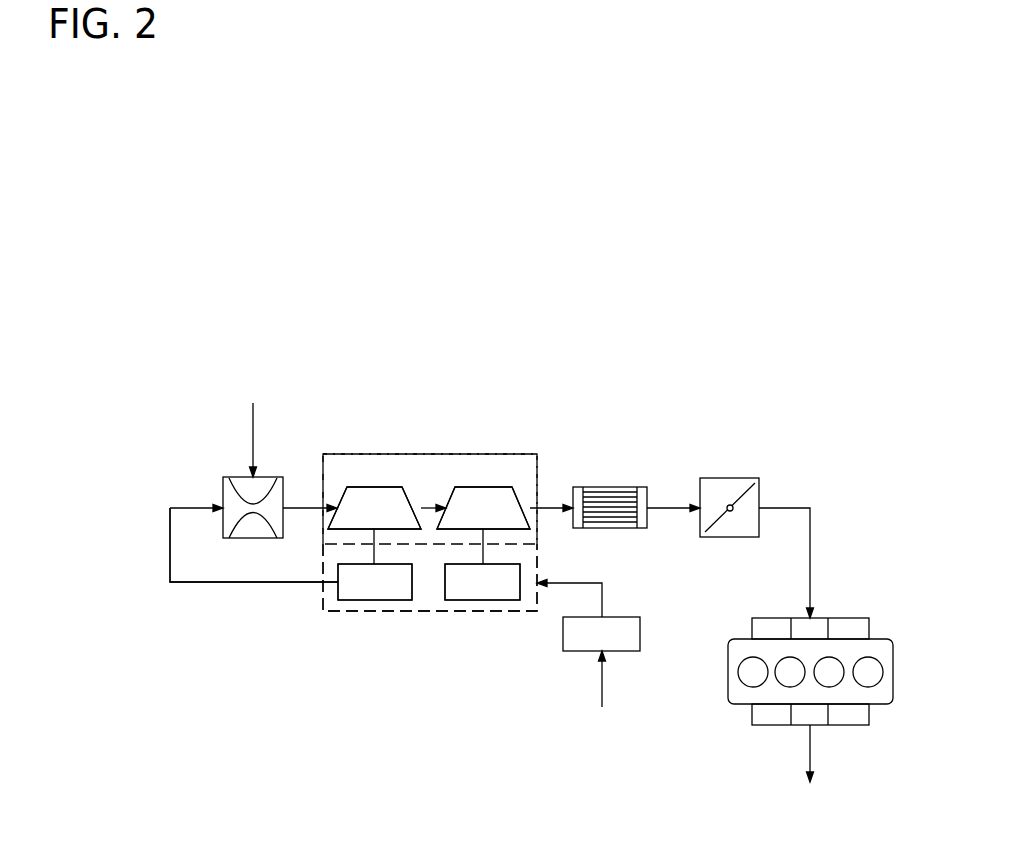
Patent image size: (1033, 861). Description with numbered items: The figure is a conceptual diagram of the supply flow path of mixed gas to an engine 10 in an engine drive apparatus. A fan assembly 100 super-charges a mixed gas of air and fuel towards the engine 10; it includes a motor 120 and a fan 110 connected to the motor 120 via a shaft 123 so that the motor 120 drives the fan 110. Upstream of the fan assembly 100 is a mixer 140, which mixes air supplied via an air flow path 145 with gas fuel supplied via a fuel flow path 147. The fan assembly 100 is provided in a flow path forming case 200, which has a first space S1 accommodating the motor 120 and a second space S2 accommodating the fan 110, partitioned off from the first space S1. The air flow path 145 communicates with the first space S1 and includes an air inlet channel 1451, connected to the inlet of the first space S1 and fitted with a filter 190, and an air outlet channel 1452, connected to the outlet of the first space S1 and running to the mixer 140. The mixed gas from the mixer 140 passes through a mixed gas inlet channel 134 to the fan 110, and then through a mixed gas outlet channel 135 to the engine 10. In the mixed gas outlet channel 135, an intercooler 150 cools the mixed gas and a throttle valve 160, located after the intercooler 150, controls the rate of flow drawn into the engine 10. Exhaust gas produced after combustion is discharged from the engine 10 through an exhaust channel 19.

The engine 10 is at (881, 600).
The exhaust channel 19 is at (810, 745).
The fan assembly 100 is at (444, 614).
The fan 110 is at (364, 487).
The motor 120 is at (365, 600).
The shaft 123 is at (374, 549).
The mixed gas inlet channel 134 is at (303, 506).
The mixed gas outlet channel 135 is at (545, 505).
The mixer 140 is at (282, 477).
The air flow path 145 is at (190, 507).
The fuel flow path 147 is at (253, 433).
The intercooler 150 is at (612, 487).
The throttle valve 160 is at (728, 478).
The filter 190 is at (623, 652).
The flow path forming case 200 is at (326, 612).
The air inlet channel 1451 is at (563, 584).
The air outlet channel 1452 is at (276, 582).
The first space S1 is at (328, 593).
The second space S2 is at (341, 467).